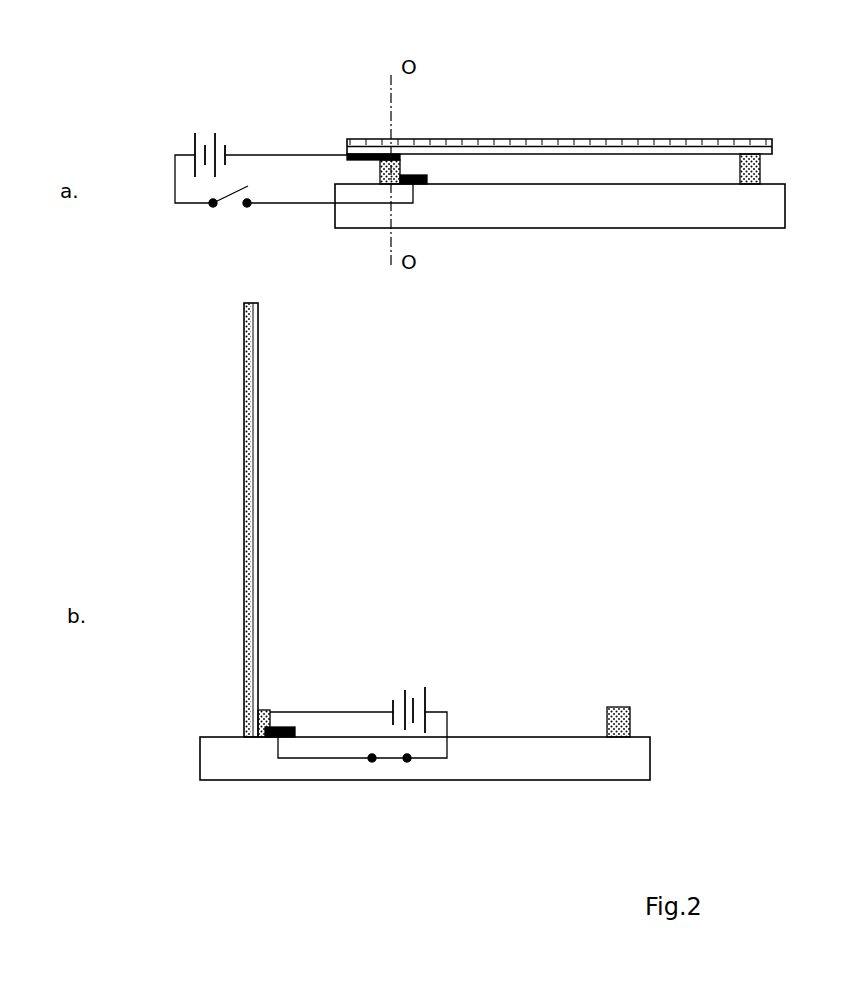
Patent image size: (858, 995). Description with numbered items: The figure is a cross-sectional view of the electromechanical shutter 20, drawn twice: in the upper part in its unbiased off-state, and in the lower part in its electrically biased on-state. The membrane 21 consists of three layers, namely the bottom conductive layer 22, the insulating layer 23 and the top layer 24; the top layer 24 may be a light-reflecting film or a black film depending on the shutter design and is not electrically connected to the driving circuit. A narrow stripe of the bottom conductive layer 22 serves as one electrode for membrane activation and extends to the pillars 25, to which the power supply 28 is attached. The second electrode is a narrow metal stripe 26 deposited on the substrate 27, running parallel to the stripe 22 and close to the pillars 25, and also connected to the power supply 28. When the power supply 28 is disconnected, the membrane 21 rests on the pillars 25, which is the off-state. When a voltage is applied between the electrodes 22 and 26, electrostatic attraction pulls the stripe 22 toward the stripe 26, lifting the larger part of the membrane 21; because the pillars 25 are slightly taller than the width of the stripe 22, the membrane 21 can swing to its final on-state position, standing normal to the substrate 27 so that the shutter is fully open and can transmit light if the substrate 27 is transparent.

The shutter 20 is at (589, 99).
The membrane 21 is at (770, 138).
The bottom conductive layer 22 is at (353, 157).
The insulating layer 23 is at (773, 153).
The top layer 24 is at (572, 128).
The pillars 25 is at (378, 183).
The metal stripe 26 is at (422, 184).
The substrate 27 is at (542, 208).
The power supply 28 is at (178, 220).